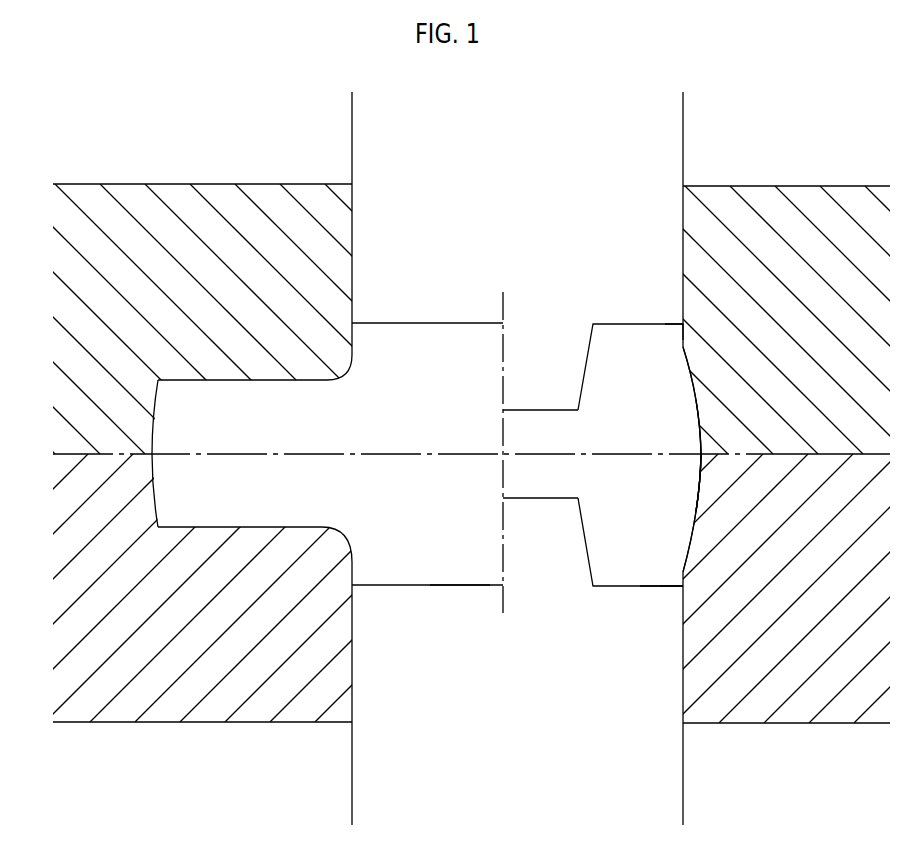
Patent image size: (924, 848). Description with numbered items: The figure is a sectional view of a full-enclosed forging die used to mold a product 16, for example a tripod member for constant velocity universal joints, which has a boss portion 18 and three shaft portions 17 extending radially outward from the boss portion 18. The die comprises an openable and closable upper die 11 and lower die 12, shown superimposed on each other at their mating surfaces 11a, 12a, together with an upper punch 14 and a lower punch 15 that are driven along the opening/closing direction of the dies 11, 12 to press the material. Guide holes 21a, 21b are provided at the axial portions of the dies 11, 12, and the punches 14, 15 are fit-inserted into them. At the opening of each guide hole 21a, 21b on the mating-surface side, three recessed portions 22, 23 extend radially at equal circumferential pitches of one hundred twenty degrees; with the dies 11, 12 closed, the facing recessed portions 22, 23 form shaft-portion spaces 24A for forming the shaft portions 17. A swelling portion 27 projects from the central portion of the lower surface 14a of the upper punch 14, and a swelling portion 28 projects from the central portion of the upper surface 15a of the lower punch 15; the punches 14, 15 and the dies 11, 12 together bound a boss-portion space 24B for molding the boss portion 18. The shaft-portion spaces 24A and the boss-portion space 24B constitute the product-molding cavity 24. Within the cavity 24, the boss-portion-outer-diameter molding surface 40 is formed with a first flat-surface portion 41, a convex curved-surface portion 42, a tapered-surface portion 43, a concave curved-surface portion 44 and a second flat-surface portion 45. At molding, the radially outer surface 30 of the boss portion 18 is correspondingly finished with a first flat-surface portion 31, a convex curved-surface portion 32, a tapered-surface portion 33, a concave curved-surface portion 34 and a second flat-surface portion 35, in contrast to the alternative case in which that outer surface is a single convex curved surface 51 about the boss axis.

The die 11 is at (815, 317).
The mating surface 11a is at (815, 454).
The die 12 is at (815, 611).
The mating surface 12a is at (867, 455).
The upper punch 14 is at (653, 165).
The lower surface 14a is at (632, 324).
The lower punch 15 is at (655, 748).
The upper surface 15a is at (625, 586).
The product 16 is at (420, 346).
The shaft portion 17 is at (276, 507).
The boss portion 18 is at (400, 565).
The guide hole 21a is at (352, 225).
The guide hole 21b is at (352, 690).
The recessed portion 22 is at (218, 380).
The recessed portion 23 is at (230, 527).
The cavity 24 is at (654, 574).
The shaft-portion space 24A is at (265, 388).
The boss-portion space 24B is at (468, 585).
The swelling portion 27 is at (535, 388).
The swelling portion 28 is at (535, 520).
The radially outer surface 30 is at (697, 400).
The first flat-surface portion 31 is at (702, 460).
The convex curved-surface portion 32 is at (703, 498).
The tapered-surface portion 33 is at (692, 538).
The concave curved-surface portion 34 is at (687, 578).
The second flat-surface portion 35 is at (683, 586).
The boss-portion-outer-diameter molding surface 40 is at (697, 507).
The first flat-surface portion 41 is at (698, 456).
The convex curved-surface portion 42 is at (699, 420).
The tapered-surface portion 43 is at (690, 377).
The concave curved-surface portion 44 is at (683, 352).
The second flat-surface portion 45 is at (683, 340).
The single convex curved surface 51 is at (679, 587).